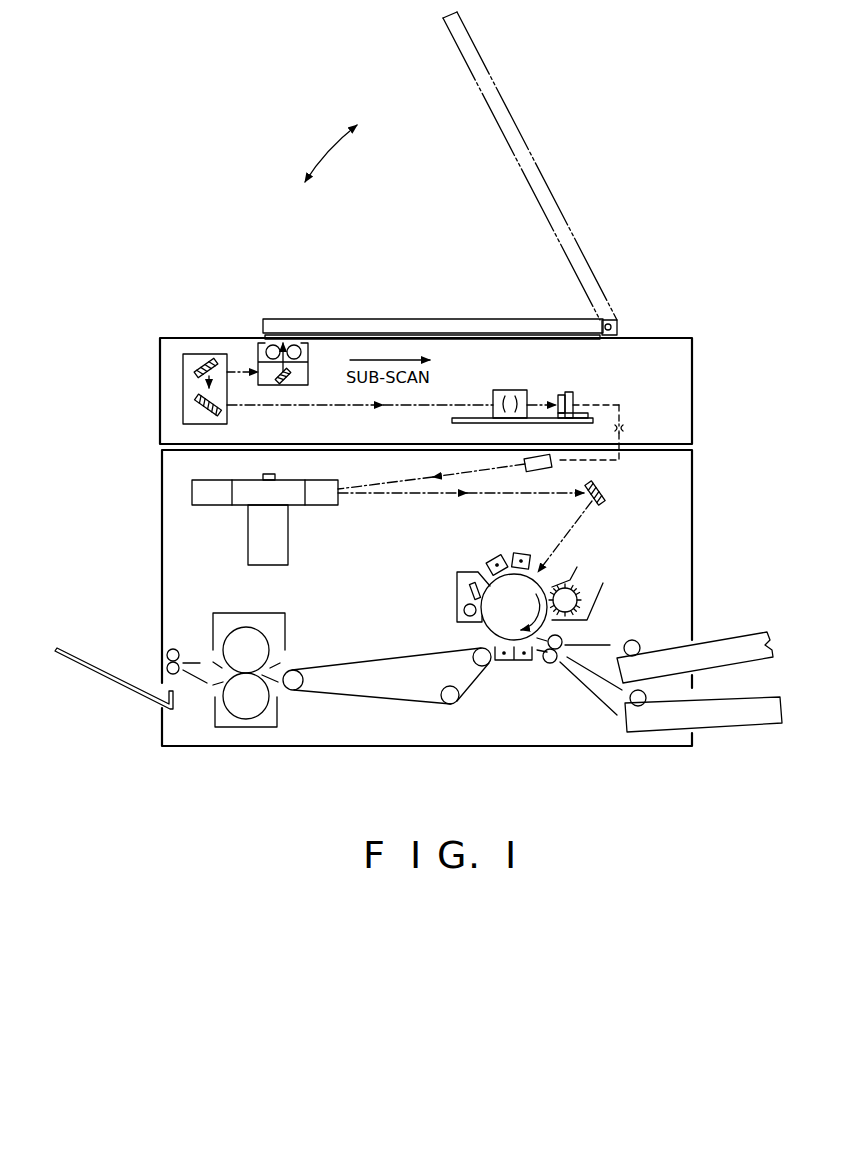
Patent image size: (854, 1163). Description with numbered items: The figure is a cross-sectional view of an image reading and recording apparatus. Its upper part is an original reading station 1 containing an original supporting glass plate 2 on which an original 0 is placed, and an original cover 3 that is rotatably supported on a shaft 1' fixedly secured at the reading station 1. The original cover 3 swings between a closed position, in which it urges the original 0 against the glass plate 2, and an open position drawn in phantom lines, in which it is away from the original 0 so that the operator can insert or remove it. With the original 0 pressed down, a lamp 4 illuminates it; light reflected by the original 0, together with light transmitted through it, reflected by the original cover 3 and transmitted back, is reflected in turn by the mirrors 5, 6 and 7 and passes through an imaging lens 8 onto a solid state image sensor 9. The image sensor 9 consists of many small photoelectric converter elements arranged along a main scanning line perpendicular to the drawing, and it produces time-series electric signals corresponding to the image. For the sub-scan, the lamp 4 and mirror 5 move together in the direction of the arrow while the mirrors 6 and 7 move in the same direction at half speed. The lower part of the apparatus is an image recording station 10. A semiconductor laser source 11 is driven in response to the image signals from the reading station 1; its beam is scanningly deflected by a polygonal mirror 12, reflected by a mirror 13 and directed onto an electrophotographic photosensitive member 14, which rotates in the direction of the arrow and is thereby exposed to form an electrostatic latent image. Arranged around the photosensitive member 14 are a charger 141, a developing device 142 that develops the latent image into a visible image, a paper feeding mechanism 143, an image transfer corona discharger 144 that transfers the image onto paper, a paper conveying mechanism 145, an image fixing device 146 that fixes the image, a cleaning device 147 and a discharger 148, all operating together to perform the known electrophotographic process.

The original reading station 1 is at (435, 363).
The shaft 1' is at (627, 309).
The original supporting glass plate 2 is at (497, 331).
The original cover 3 is at (390, 318).
The original 0 is at (443, 331).
The lamp 4 is at (293, 345).
The mirror 5 is at (290, 381).
The mirror 6 is at (207, 361).
The mirror 7 is at (183, 407).
The imaging lens 8 is at (513, 390).
The solid state image sensor 9 is at (565, 392).
The image recording station 10 is at (692, 500).
The semiconductor laser source 11 is at (543, 470).
The polygonal mirror 12 is at (295, 507).
The mirror 13 is at (598, 488).
The electrophotographic photosensitive member 14 is at (486, 572).
The charger 141 is at (522, 553).
The developing device 142 is at (600, 600).
The paper feeding mechanism 143 is at (587, 695).
The image transfer corona discharger 144 is at (518, 661).
The paper conveying mechanism 145 is at (387, 657).
The image fixing device 146 is at (285, 626).
The cleaning device 147 is at (455, 587).
The discharger 148 is at (493, 556).